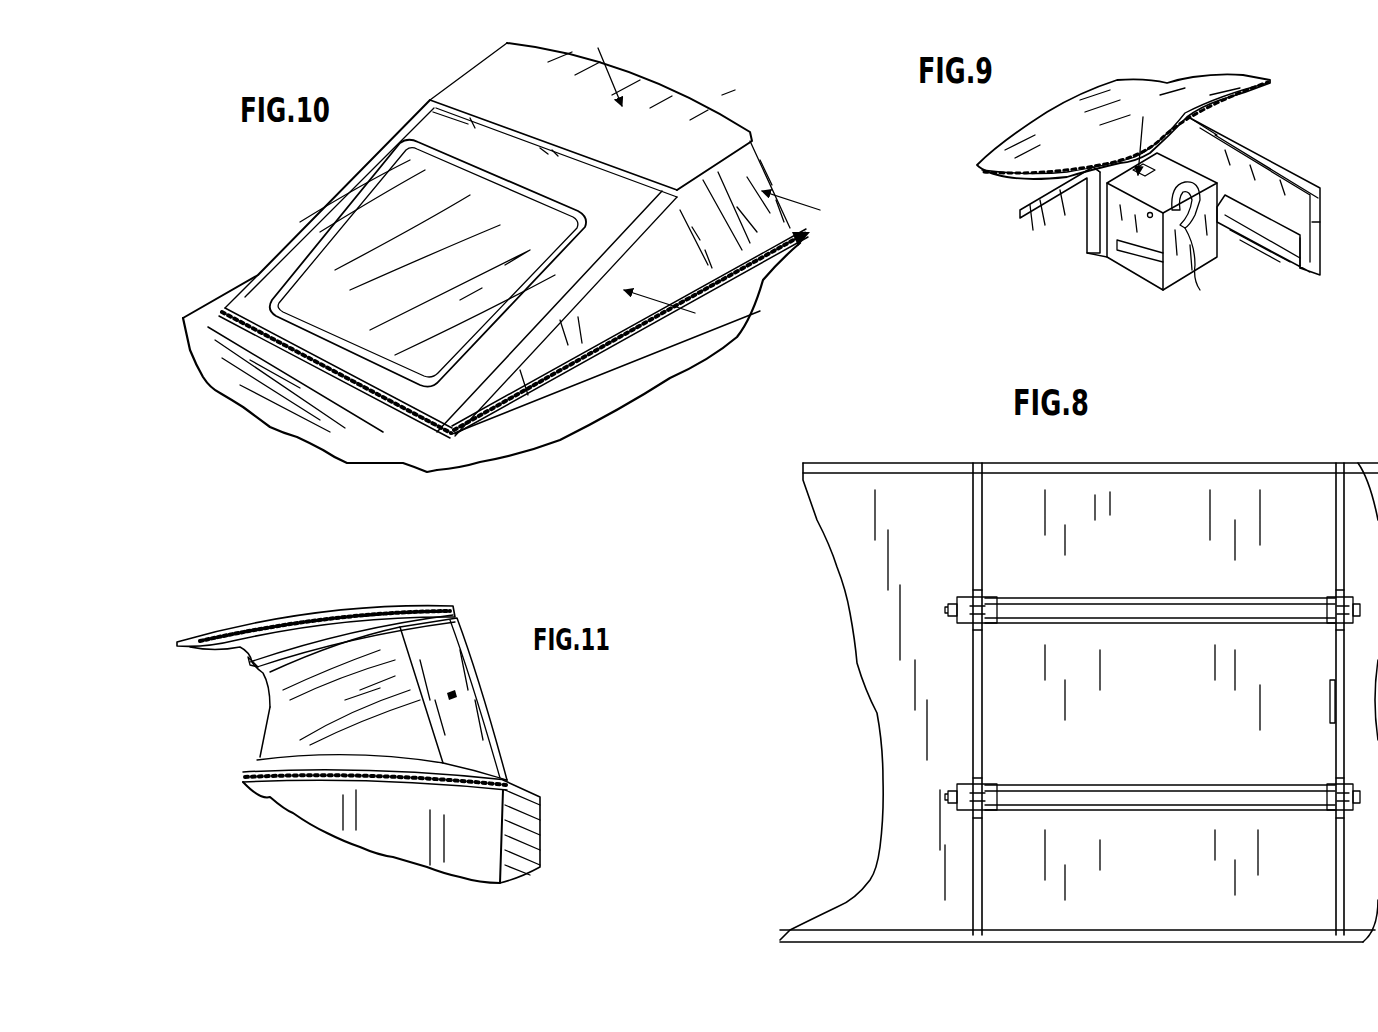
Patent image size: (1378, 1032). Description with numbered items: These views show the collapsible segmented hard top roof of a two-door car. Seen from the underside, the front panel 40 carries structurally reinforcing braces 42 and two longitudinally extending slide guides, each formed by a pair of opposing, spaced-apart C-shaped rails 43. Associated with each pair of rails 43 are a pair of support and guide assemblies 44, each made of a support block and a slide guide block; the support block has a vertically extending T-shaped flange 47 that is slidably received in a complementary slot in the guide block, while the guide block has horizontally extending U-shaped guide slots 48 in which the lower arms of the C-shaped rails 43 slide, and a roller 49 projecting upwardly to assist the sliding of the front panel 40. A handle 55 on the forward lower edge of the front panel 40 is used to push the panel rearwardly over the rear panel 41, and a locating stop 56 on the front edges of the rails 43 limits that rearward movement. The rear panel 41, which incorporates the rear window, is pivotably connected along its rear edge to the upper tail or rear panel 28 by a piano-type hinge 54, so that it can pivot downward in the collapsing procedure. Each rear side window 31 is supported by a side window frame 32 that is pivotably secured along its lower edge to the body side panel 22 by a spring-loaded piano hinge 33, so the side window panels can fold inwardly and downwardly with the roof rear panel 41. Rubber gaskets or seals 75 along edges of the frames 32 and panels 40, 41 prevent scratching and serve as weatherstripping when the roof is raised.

In FIG. 10, the body side panel 22 is at (665, 358).
In FIG. 11, the body side panel 22 is at (543, 798).
In FIG. 10, the upper tail or rear panel 28 is at (247, 375).
In FIG. 10, the rear side window 31 is at (602, 318).
In FIG. 11, the rear side window 31 is at (350, 713).
In FIG. 10, the side window frame 32 is at (800, 238).
In FIG. 11, the side window frame 32 is at (483, 742).
In FIG. 10, the piano hinge 33 is at (722, 292).
In FIG. 11, the piano hinge 33 is at (337, 776).
In FIG. 10, the front panel 40 is at (580, 105).
In FIG. 9, the front panel 40 is at (1085, 141).
In FIG. 8, the front panel 40 is at (1168, 721).
In FIG. 10, the rear panel 41 is at (525, 161).
In FIG. 8, the rear panel 41 is at (957, 703).
In FIG. 11, the rear panel 41 is at (238, 630).
In FIG. 10, the structurally reinforcing braces 42 is at (432, 110).
In FIG. 8, the structurally reinforcing braces 42 is at (976, 536).
In FIG. 10, the C-shaped rails 43 is at (425, 112).
In FIG. 9, the C-shaped rails 43 is at (1262, 168).
In FIG. 8, the C-shaped rails 43 is at (1143, 598).
In FIG. 8, the support and guide assemblies 44 is at (958, 590).
In FIG. 9, the T-shaped flange 47 is at (1145, 131).
In FIG. 9, the U-shaped guide slots 48 is at (1140, 256).
In FIG. 9, the roller 49 is at (1205, 270).
In FIG. 10, the piano-type hinge 54 is at (363, 383).
In FIG. 8, the handle 55 is at (1330, 695).
In FIG. 9, the locating stop 56 is at (1322, 225).
In FIG. 11, the locating stop 56 is at (456, 694).
In FIG. 11, the rubber gaskets or seals 75 is at (262, 688).